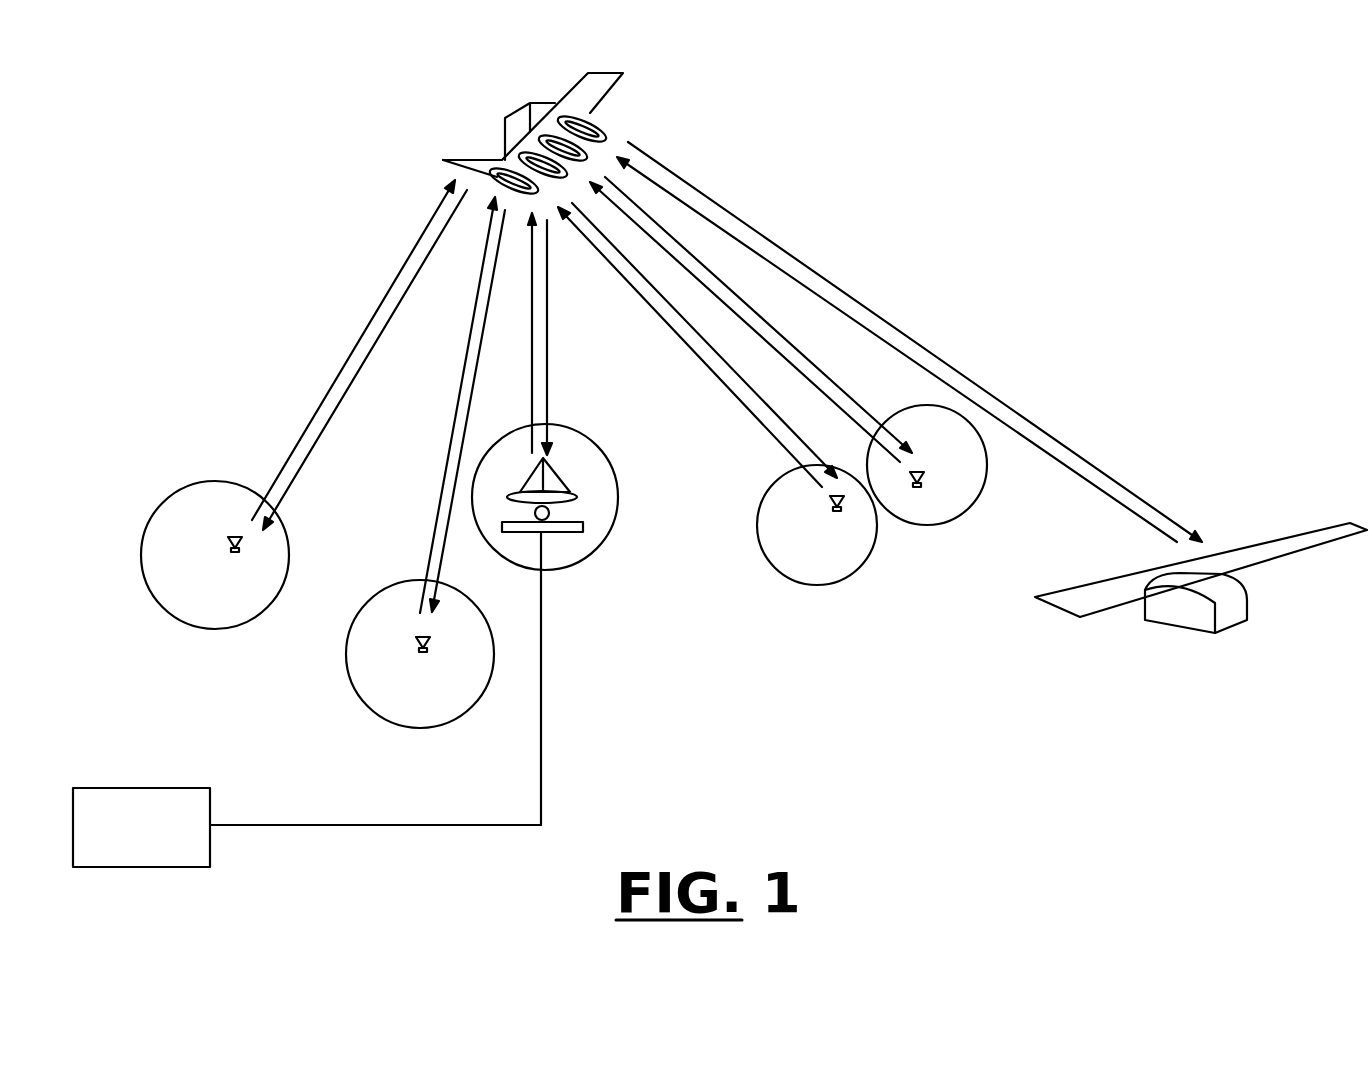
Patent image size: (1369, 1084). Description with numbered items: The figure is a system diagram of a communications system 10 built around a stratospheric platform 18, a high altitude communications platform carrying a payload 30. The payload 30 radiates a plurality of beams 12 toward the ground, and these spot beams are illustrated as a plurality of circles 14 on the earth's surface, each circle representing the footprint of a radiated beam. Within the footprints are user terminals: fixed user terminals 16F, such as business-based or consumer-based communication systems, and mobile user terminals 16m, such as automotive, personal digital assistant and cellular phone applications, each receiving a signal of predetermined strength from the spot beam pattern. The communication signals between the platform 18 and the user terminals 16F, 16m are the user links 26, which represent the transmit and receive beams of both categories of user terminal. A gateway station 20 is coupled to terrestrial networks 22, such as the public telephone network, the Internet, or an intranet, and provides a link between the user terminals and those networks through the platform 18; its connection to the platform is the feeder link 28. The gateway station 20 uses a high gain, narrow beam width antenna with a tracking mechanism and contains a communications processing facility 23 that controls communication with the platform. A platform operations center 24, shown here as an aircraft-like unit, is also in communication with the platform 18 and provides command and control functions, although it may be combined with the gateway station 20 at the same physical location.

The communications system 10 is at (202, 236).
The beams 12 is at (483, 267).
The circles 14 is at (141, 563).
The fixed user terminal 16F is at (226, 540).
The mobile user terminal 16m is at (832, 513).
The stratospheric platform 18 is at (567, 126).
The gateway station 20 is at (575, 624).
The terrestrial networks 22 is at (112, 788).
The communications processing facility 23 is at (557, 515).
The platform operations center 24 is at (1193, 620).
The user links 26 is at (392, 282).
The feeder link 28 is at (548, 272).
The payload 30 is at (512, 115).